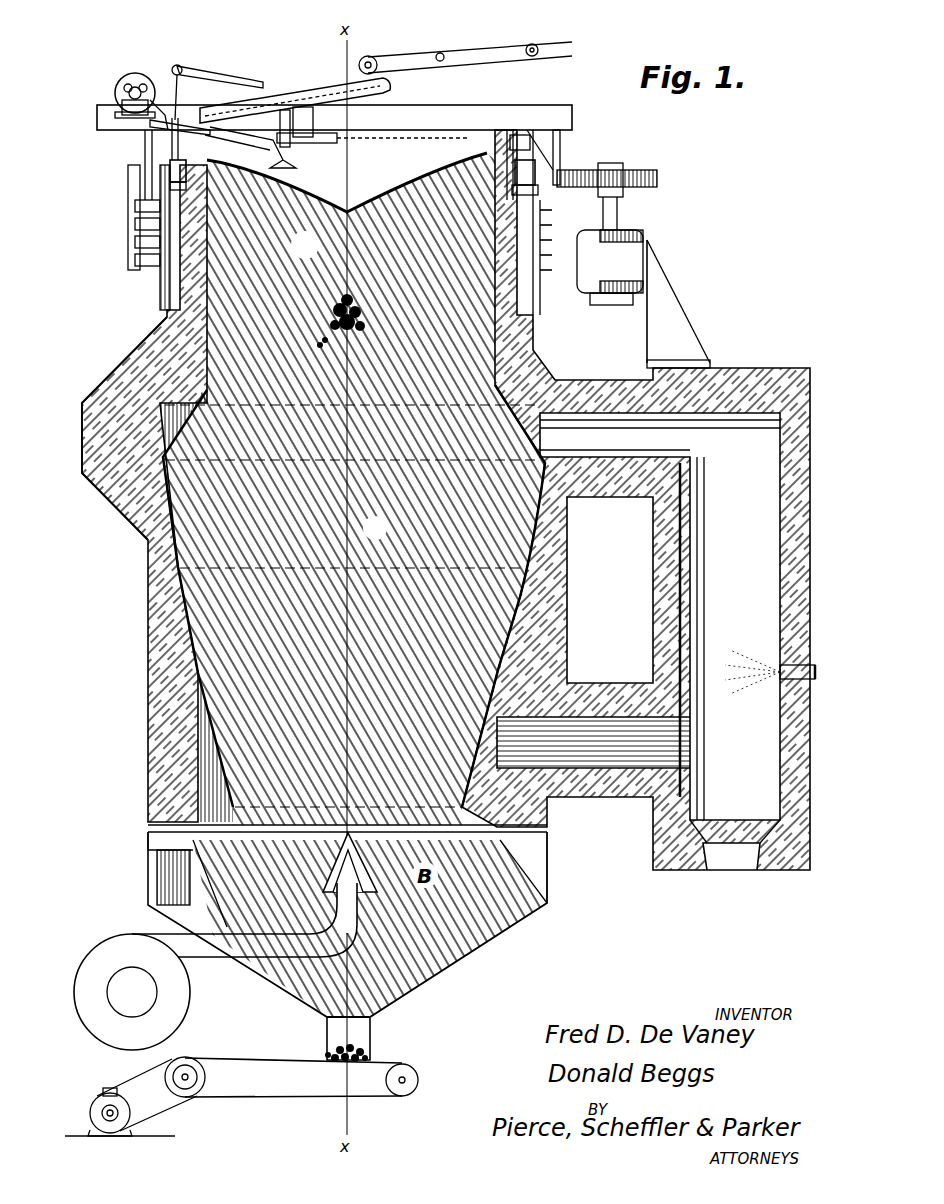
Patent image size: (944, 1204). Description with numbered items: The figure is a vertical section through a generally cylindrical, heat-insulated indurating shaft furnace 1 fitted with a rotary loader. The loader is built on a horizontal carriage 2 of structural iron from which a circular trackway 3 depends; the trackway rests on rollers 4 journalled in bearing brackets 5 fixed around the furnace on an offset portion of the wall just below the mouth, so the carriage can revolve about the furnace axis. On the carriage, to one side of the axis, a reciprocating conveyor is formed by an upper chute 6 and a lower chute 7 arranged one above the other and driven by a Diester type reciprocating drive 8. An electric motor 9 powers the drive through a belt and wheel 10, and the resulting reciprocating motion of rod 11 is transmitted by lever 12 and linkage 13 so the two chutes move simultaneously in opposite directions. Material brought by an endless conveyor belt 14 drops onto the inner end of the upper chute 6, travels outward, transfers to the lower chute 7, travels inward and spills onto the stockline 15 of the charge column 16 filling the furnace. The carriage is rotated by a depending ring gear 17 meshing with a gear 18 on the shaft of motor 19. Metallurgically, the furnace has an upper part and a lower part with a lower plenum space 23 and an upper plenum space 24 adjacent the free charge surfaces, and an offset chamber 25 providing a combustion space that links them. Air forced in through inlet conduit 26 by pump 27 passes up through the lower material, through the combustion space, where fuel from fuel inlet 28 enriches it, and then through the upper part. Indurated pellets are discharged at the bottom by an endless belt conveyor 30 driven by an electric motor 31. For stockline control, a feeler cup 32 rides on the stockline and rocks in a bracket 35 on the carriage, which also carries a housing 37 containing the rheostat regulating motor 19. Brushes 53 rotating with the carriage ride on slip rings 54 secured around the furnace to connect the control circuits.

The shaft furnace 1 is at (146, 598).
The carriage 2 is at (500, 106).
The circular trackway 3 is at (532, 150).
The rollers 4 is at (530, 175).
The bearing brackets 5 is at (527, 190).
The upper chute 6 is at (317, 88).
The lower chute 7 is at (338, 140).
The reciprocating drive 8 is at (110, 117).
The electric motor 9 is at (175, 65).
The wheel 10 is at (150, 78).
The rod 11 is at (150, 125).
The lever 12 is at (168, 135).
The linkage 13 is at (232, 75).
The endless conveyor belt 14 is at (475, 52).
The stockline 15 is at (448, 166).
The charge column 16 is at (354, 489).
The ring gear 17 is at (562, 178).
The gear 18 is at (647, 170).
The motor 19 is at (643, 299).
The lower plenum space 23 is at (200, 750).
The upper plenum space 24 is at (177, 393).
The chamber 25 is at (735, 430).
The inlet conduit 26 is at (243, 953).
The pump 27 is at (132, 992).
The fuel inlet 28 is at (782, 668).
The endless belt conveyor 30 is at (250, 1060).
The electric motor 31 is at (100, 1106).
The feeler cup 32 is at (278, 162).
The bracket 35 is at (314, 122).
The housing 37 is at (285, 110).
The brushes 53 is at (138, 258).
The slip rings 54 is at (166, 258).